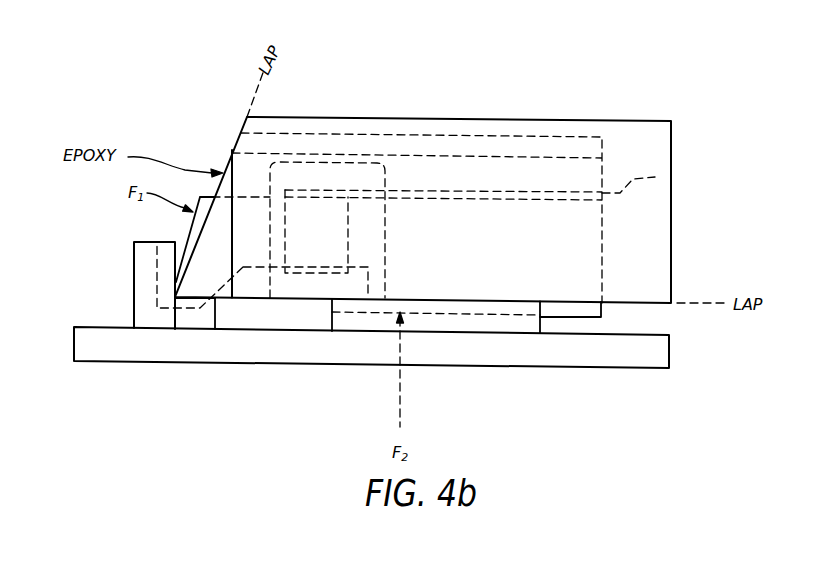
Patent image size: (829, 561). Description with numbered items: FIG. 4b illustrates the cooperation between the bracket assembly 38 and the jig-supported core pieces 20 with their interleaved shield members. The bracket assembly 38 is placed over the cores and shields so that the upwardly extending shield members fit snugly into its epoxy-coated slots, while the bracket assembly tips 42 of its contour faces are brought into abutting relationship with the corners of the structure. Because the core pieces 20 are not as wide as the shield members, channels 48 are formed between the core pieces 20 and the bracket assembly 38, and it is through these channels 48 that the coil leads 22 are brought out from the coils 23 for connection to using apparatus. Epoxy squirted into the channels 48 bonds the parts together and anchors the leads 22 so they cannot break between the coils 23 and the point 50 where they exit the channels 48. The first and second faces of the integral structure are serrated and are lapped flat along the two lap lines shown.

The core pieces 20 is at (188, 238).
The coil leads 22 is at (440, 190).
The coils 23 is at (305, 274).
The bracket assembly 38 is at (655, 277).
The bracket assembly tips 42 is at (194, 299).
The channels 48 is at (513, 197).
The channel exit 50 is at (602, 201).